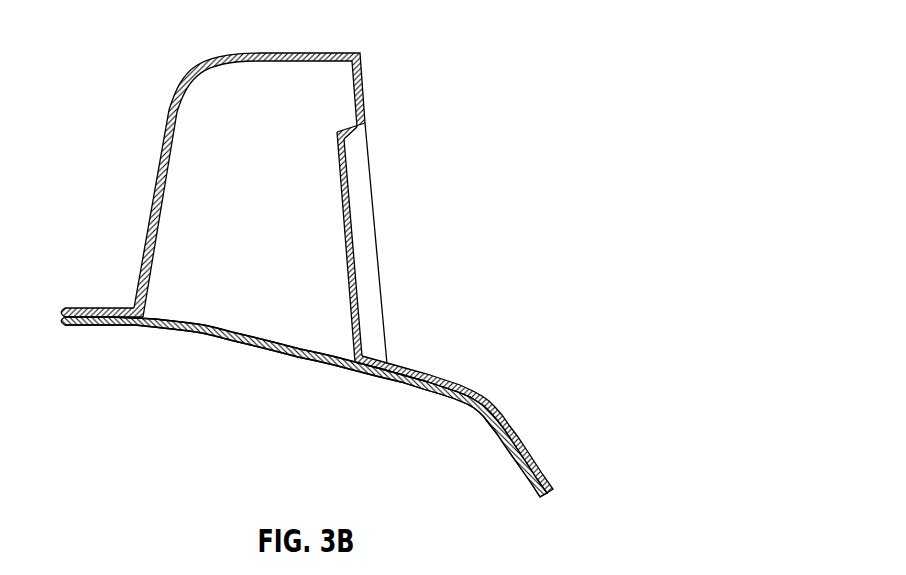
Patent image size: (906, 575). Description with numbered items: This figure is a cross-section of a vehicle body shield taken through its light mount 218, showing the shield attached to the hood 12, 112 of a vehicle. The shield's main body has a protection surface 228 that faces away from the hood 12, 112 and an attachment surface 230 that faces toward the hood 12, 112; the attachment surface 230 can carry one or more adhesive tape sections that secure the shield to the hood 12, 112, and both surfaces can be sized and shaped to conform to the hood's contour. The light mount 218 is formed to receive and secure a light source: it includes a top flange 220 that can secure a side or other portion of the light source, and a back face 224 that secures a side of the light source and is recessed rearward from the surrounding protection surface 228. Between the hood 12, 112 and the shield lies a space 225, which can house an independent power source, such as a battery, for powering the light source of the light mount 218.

The hood 12 is at (233, 335).
The hood 112 is at (306, 407).
The light mount 218 is at (361, 53).
The top flange 220 is at (358, 140).
The back face 224 is at (360, 221).
The space 225 is at (269, 94).
The protection surface 228 is at (153, 157).
The attachment surface 230 is at (112, 329).